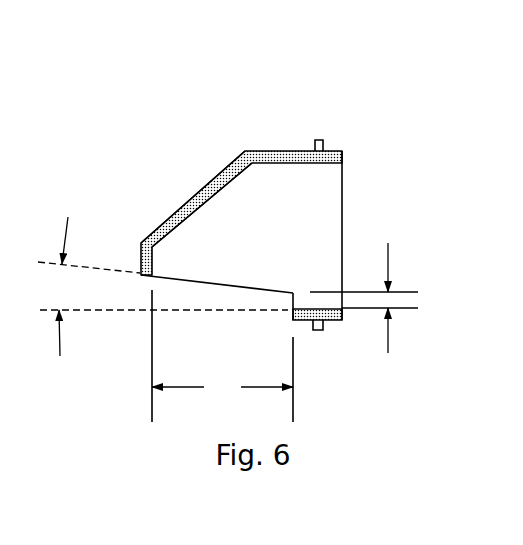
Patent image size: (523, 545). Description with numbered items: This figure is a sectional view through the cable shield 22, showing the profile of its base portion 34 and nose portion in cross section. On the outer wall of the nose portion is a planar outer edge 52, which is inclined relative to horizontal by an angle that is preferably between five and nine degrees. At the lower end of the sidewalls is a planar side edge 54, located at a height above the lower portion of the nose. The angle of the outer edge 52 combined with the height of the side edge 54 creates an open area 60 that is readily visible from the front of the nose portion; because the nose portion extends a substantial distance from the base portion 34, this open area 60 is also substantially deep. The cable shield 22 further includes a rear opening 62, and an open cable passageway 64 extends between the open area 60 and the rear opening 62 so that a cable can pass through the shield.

The cable shield 22 is at (142, 138).
The base portion 34 is at (318, 140).
The outer edge 52 is at (143, 277).
The side edge 54 is at (258, 288).
The open area 60 is at (215, 290).
The rear opening 62 is at (333, 221).
The cable passageway 64 is at (263, 235).